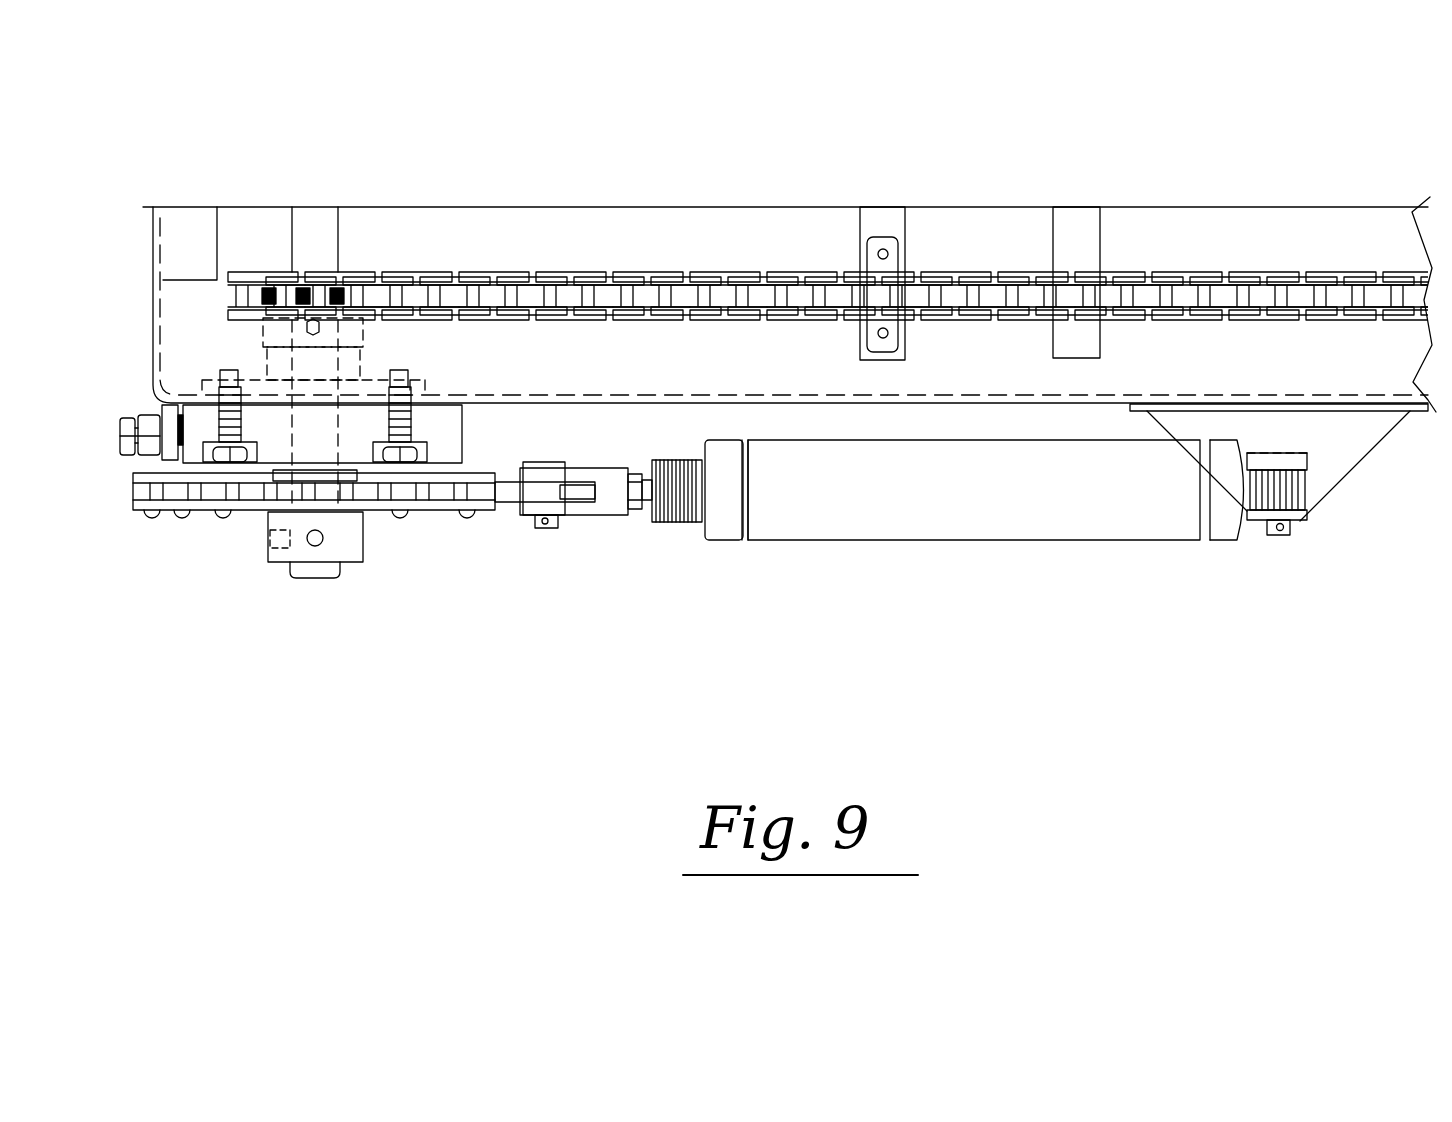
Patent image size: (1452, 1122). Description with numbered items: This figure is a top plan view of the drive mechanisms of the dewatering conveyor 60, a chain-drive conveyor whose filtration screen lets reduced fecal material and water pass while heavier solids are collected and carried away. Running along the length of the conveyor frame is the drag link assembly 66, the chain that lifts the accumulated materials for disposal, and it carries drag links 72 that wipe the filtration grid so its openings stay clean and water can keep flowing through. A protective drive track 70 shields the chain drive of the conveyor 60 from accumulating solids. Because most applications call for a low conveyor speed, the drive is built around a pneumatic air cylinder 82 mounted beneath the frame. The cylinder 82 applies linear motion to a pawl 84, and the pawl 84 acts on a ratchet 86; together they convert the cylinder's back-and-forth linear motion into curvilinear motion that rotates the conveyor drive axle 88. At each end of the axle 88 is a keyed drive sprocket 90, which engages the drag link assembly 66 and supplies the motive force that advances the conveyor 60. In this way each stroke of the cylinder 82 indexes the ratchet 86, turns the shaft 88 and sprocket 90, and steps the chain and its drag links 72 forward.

The dewatering conveyor 60 is at (613, 226).
The drag link assembly 66 is at (473, 272).
The protective drive track 70 is at (968, 403).
The drag links 72 is at (868, 224).
The pneumatic air cylinder 82 is at (893, 543).
The pawl 84 is at (590, 515).
The ratchet 86 is at (393, 517).
The drive axle 88 is at (304, 228).
The keyed drive sprocket 90 is at (367, 270).